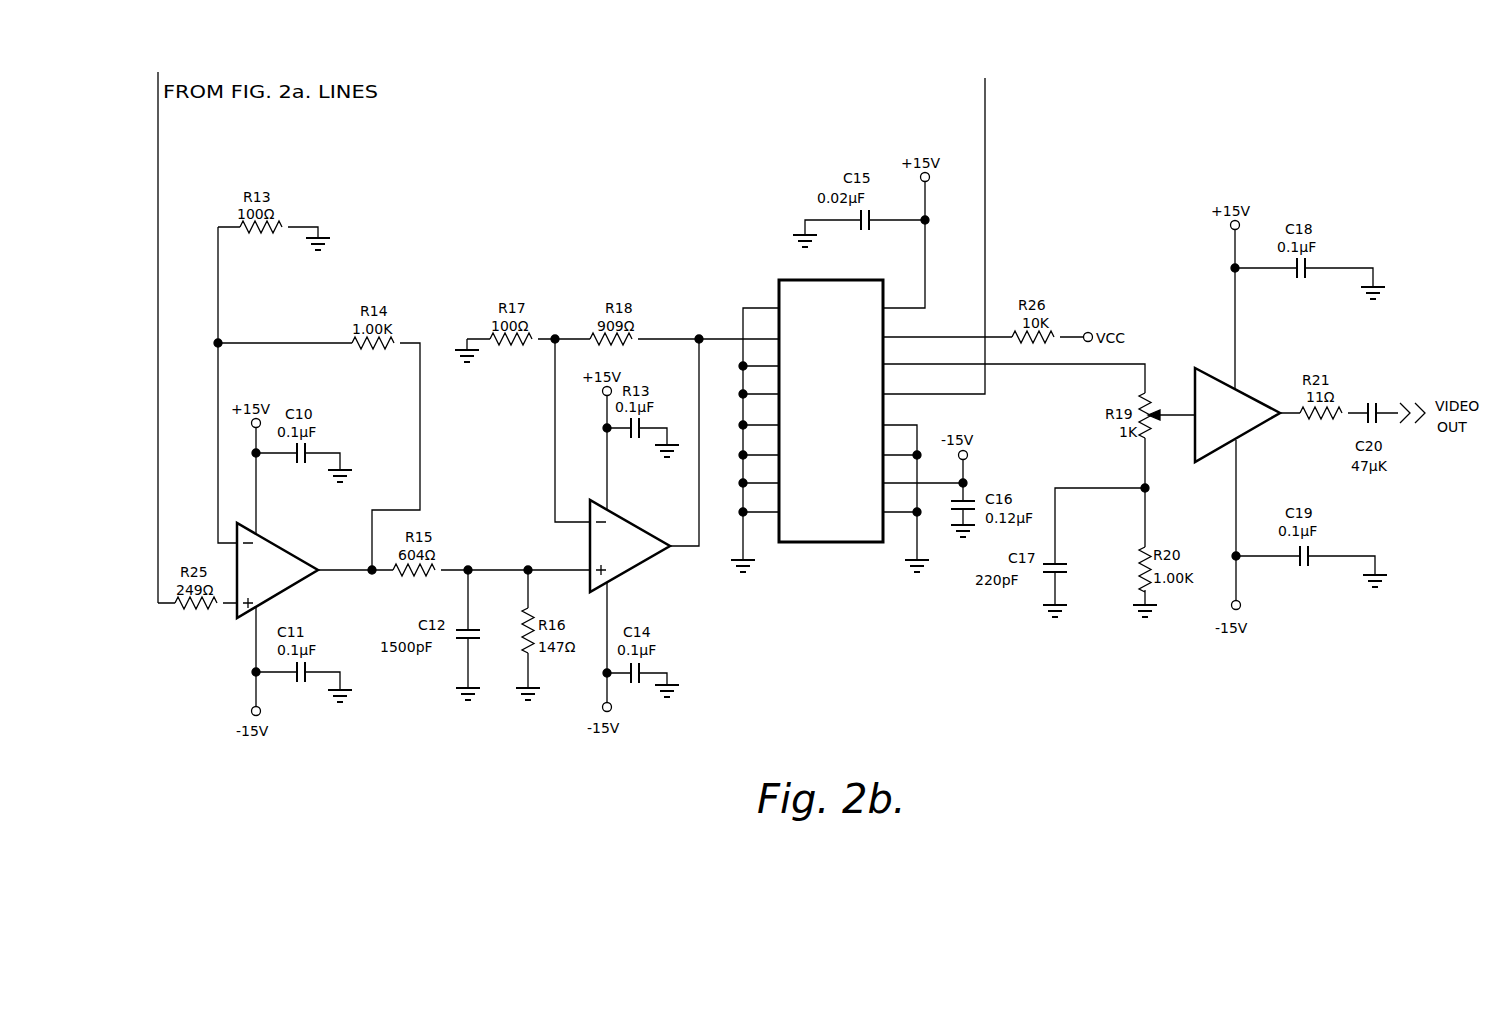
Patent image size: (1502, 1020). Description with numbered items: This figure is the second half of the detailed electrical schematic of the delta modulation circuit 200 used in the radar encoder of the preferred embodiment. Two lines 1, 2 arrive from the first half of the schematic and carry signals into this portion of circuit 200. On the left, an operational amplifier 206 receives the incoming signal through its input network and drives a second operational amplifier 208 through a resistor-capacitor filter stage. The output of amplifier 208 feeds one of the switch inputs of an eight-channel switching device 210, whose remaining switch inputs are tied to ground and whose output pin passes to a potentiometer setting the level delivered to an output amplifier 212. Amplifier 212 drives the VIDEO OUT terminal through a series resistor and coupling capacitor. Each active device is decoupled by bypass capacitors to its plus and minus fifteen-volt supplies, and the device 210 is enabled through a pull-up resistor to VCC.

The line from FIG. 2a 1 is at (157, 329).
The line from FIG. 2a 2 is at (936, 225).
The delta modulation circuit 200 is at (1222, 123).
The operational amplifier 206 is at (280, 538).
The operational amplifier 208 is at (626, 516).
The analog multiplexer switch 210 is at (779, 280).
The output amplifier 212 is at (1216, 368).